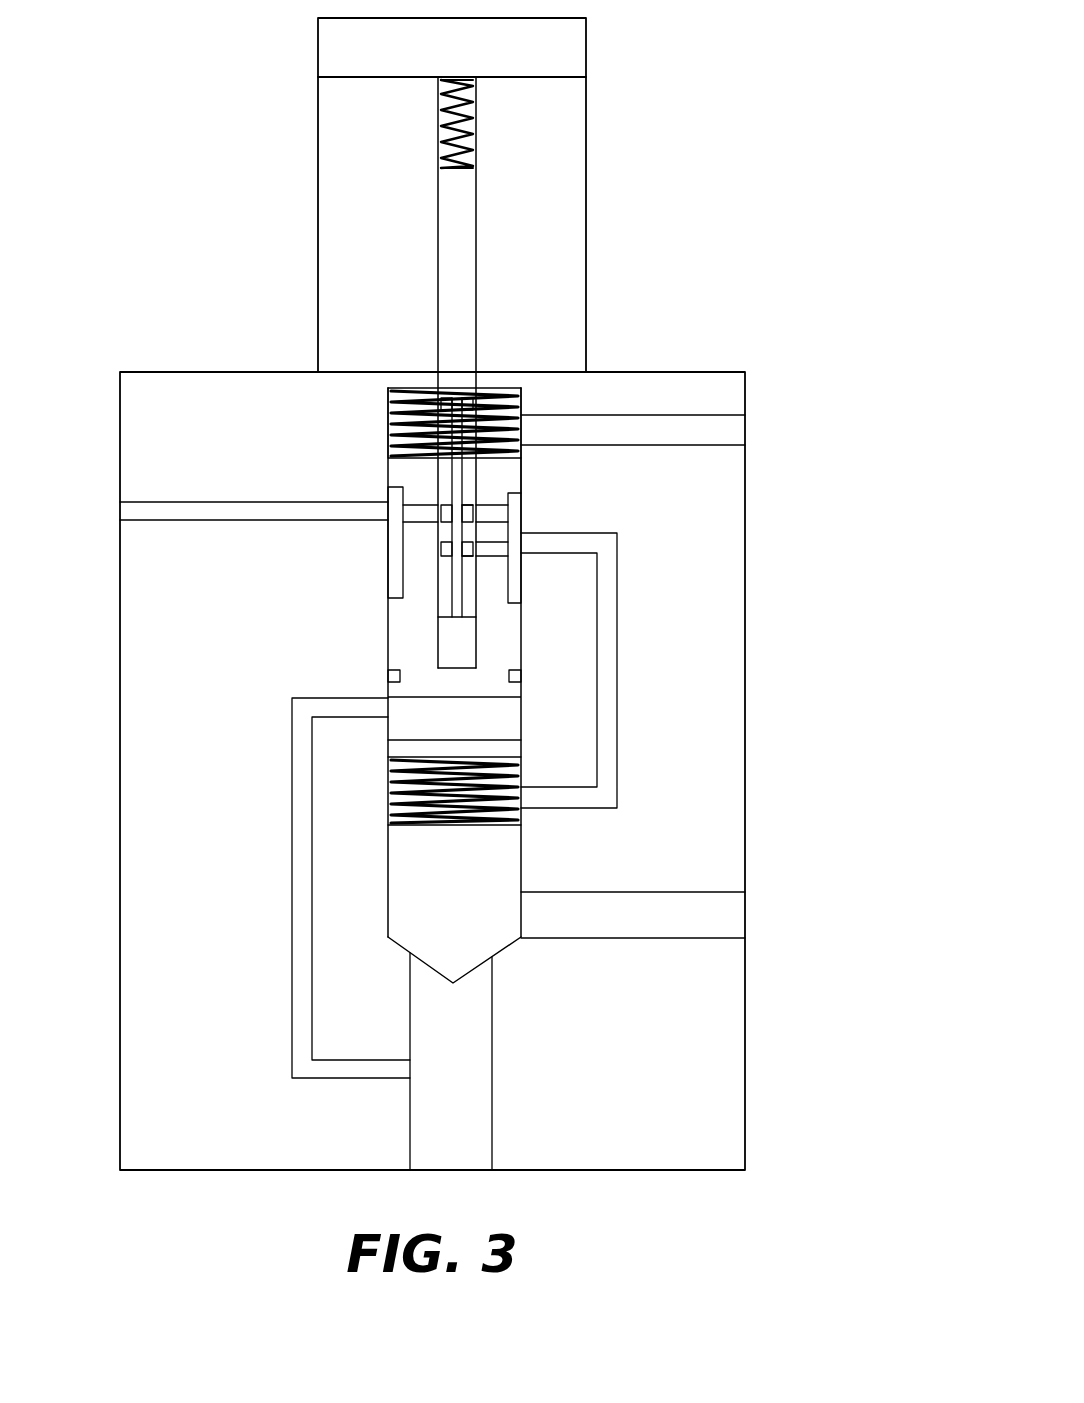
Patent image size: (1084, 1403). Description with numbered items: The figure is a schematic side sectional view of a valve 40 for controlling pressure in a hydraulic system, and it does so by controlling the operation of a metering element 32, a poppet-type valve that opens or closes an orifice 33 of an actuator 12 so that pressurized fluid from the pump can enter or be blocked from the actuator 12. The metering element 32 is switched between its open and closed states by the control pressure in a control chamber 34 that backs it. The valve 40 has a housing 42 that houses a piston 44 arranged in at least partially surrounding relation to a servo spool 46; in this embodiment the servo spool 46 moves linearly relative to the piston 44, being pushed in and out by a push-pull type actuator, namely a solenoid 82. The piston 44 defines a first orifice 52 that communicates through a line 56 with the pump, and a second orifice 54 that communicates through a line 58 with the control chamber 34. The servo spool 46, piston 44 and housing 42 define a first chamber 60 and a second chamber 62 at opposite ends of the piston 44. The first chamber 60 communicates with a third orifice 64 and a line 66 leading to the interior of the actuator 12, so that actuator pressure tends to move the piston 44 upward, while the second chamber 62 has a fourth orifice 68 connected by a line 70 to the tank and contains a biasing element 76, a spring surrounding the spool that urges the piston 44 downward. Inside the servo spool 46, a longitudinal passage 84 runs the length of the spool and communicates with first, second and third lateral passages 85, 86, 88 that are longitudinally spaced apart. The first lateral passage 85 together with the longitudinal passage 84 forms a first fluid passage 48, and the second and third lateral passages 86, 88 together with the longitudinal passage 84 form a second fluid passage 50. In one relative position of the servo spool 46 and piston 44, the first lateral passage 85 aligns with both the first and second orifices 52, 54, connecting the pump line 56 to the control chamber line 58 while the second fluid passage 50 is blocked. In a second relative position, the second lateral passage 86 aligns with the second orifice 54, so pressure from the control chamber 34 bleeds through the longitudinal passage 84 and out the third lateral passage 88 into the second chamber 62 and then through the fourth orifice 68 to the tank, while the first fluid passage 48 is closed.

The actuator 12 is at (477, 1090).
The metering element 32 is at (520, 868).
The orifice 33 is at (697, 924).
The control chamber 34 is at (390, 797).
The valve 40 is at (730, 70).
The housing 42 is at (720, 568).
The piston 44 is at (388, 605).
The servo spool 46 is at (442, 568).
The first fluid passage 48 is at (482, 512).
The second fluid passage 50 is at (482, 546).
The first orifice 52 is at (392, 512).
The second orifice 54 is at (512, 545).
The line 56 is at (178, 523).
The line 58 is at (617, 637).
The first chamber 60 is at (521, 722).
The second chamber 62 is at (388, 398).
The third orifice 64 is at (386, 707).
The line 66 is at (292, 983).
The fourth orifice 68 is at (521, 430).
The line 70 is at (695, 447).
The biasing element 76 is at (395, 432).
The solenoid 82 is at (555, 135).
The longitudinal passage 84 is at (462, 398).
The first lateral passage 85 is at (465, 503).
The second lateral passage 86 is at (463, 558).
The third lateral passage 88 is at (465, 398).